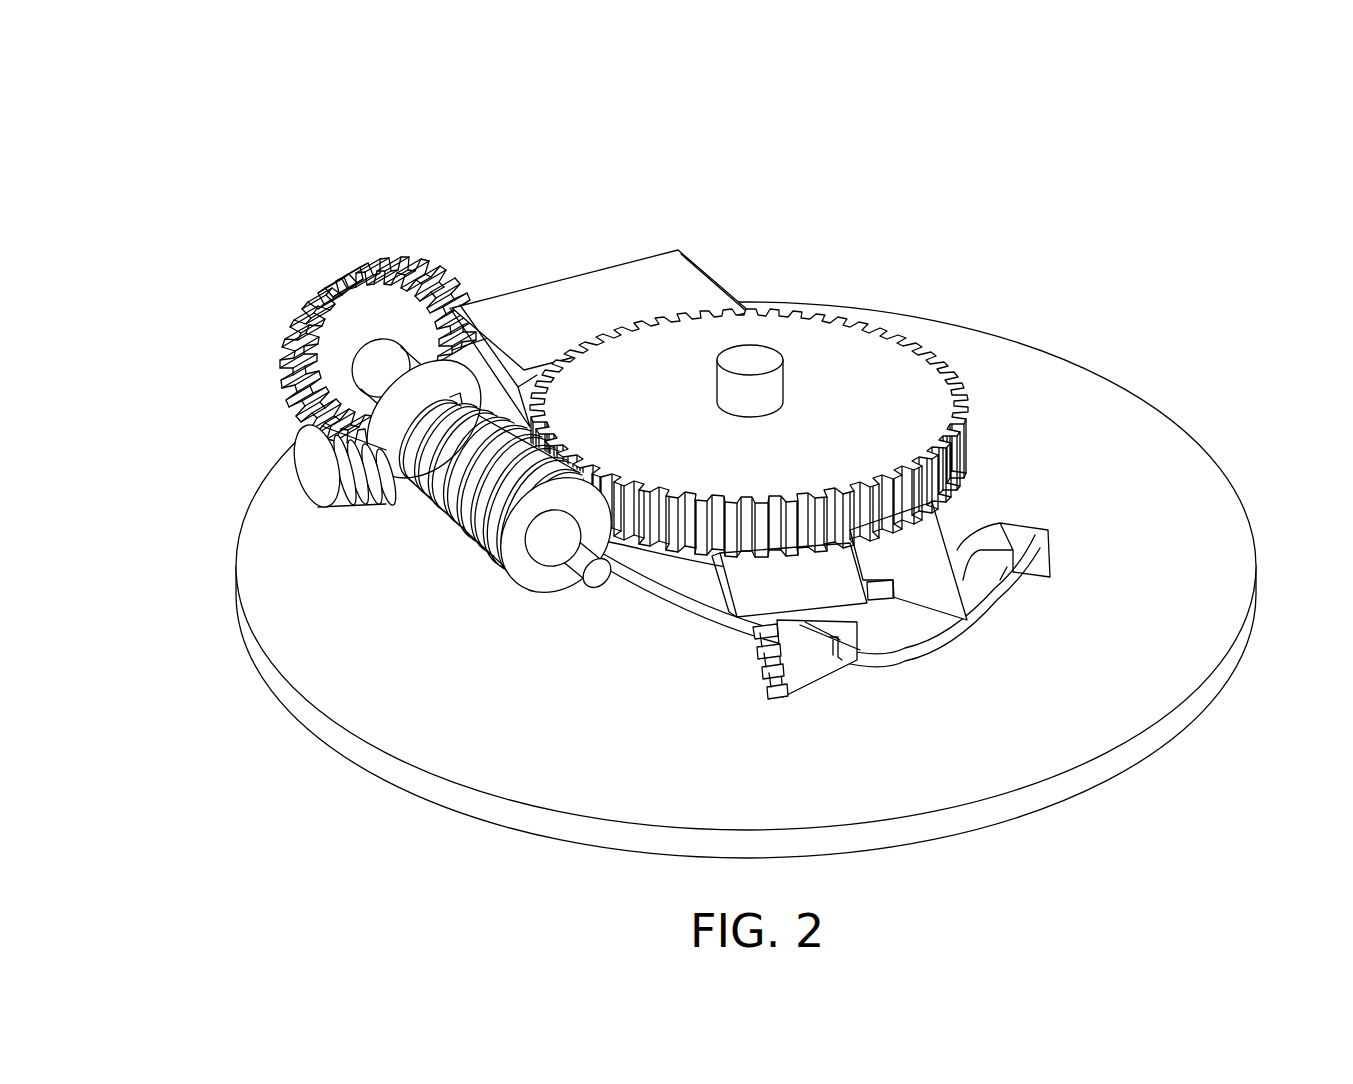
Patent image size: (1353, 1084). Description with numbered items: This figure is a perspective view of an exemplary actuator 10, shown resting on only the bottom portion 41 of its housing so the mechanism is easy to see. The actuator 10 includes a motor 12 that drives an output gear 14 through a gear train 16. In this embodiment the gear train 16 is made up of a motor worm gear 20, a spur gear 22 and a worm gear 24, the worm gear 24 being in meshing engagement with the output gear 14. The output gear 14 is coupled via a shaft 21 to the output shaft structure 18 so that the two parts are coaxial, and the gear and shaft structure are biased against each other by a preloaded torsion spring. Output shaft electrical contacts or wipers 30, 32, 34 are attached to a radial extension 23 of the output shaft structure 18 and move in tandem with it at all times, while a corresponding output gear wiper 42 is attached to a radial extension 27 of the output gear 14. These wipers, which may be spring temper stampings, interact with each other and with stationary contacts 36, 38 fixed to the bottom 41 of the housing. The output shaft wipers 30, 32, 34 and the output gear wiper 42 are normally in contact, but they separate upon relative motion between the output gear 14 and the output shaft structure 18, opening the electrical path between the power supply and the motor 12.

The actuator 10 is at (553, 198).
The motor 12 is at (655, 250).
The output gear 14 is at (828, 316).
The gear train 16 is at (232, 344).
The output shaft structure 18 is at (600, 585).
The motor worm gear 20 is at (342, 500).
The shaft 21 is at (790, 383).
The spur gear 22 is at (346, 265).
The radial extension 23 is at (1003, 628).
The worm gear 24 is at (486, 564).
The radial extension 27 is at (703, 606).
The output shaft wiper 30 is at (773, 692).
The output shaft wiper 32 is at (970, 510).
The output shaft wiper 34 is at (762, 667).
The stationary contact 36 is at (1025, 596).
The stationary contact 38 is at (1010, 525).
The bottom portion of the housing 41 is at (1245, 632).
The output gear wiper 42 is at (864, 655).